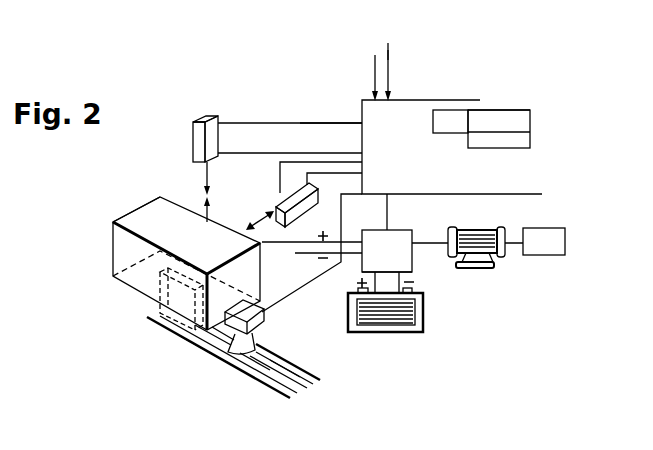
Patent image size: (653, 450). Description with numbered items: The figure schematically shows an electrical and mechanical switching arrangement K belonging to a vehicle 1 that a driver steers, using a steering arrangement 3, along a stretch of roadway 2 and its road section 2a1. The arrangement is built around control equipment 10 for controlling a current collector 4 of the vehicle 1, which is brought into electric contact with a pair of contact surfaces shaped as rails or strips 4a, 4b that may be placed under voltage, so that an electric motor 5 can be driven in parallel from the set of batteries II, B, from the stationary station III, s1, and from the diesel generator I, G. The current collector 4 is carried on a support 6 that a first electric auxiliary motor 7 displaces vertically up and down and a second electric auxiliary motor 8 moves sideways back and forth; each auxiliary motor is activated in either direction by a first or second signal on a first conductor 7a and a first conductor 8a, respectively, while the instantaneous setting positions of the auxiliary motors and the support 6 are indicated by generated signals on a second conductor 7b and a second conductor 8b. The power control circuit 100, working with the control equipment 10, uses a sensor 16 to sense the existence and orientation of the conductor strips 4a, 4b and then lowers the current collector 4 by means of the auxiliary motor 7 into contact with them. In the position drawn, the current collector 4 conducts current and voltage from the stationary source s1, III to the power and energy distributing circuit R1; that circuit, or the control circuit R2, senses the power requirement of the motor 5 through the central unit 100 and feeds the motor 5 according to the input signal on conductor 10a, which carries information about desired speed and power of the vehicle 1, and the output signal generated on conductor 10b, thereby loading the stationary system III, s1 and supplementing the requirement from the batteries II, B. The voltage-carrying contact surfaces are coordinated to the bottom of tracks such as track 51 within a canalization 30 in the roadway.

The vehicle 1 is at (220, 100).
The stretch of roadway 2 is at (157, 318).
The steering arrangement 3 is at (458, 124).
The current collector 4 is at (160, 310).
The rail or strip 4a is at (215, 347).
The rail or strip 4b is at (287, 370).
The electric motor 5 is at (473, 230).
The support 6 is at (176, 234).
The first electric auxiliary motor 7 is at (193, 133).
The first conductor 7a is at (300, 152).
The second conductor 7b is at (335, 122).
The second electric auxiliary motor 8 is at (273, 211).
The first conductor 8a is at (280, 178).
The second conductor 8b is at (340, 174).
The control equipment 10 is at (523, 142).
The conductor 10a is at (355, 78).
The conductor 10b is at (388, 218).
The sensor 16 is at (264, 317).
The canalization 30 is at (250, 369).
The track 51 is at (257, 378).
The power control circuit 100 is at (435, 98).
The power and energy distributing circuit R1 is at (415, 262).
The control circuit R2 is at (512, 110).
The set of batteries B is at (423, 313).
The diesel generator G is at (374, 61).
The diesel generator I is at (390, 58).
The set of batteries II is at (385, 345).
The stationary station III is at (161, 361).
The electrical/mechanical switching arrangement K is at (136, 202).
The stationary station s1 is at (270, 362).
The road section 2a1 is at (350, 404).